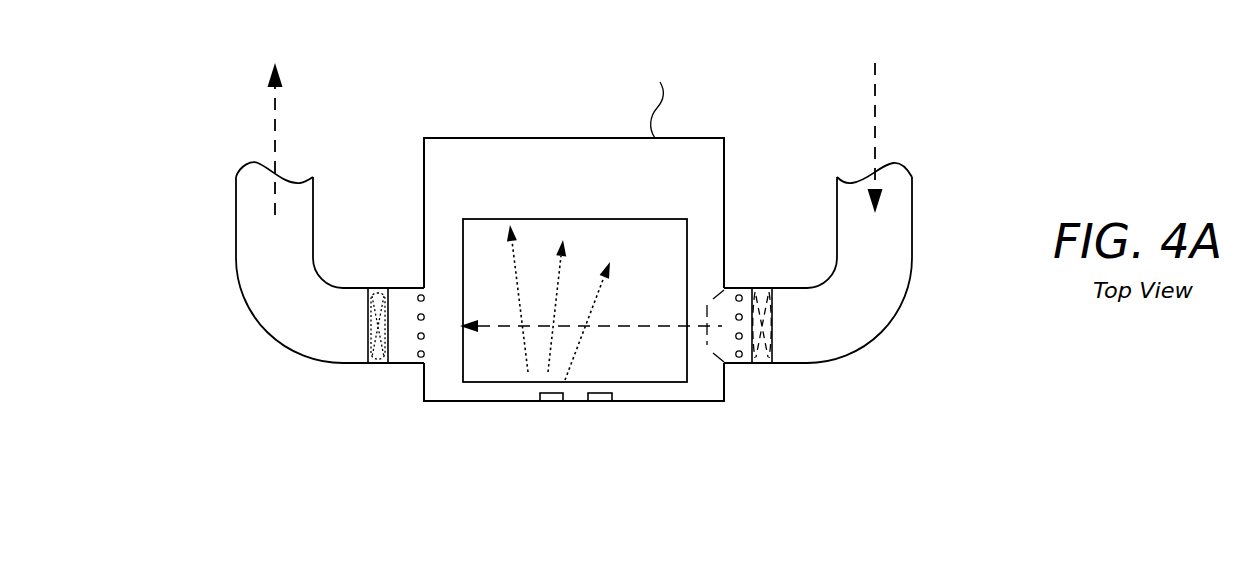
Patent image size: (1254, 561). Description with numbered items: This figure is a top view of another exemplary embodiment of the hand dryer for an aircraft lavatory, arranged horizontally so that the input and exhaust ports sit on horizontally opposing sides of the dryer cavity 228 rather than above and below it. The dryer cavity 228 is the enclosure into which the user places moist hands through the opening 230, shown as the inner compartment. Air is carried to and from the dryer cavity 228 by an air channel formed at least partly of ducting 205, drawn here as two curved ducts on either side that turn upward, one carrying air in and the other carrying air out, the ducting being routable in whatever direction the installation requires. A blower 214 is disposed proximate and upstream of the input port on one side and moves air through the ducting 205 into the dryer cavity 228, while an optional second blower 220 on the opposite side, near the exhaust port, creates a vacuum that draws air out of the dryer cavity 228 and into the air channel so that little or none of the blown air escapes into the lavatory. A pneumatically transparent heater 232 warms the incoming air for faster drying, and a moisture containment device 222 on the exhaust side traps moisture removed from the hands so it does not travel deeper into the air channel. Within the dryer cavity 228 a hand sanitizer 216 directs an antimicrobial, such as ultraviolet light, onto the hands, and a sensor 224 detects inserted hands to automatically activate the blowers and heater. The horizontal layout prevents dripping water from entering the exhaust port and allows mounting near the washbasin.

The ducting 205 is at (255, 317).
The blower 214 is at (772, 355).
The hand sanitizer 216 is at (547, 403).
The second blower 220 is at (368, 347).
The moisture containment device 222 is at (418, 340).
The sensor 224 is at (602, 403).
The dryer cavity 228 is at (555, 187).
The opening 230 is at (650, 242).
The heater 232 is at (740, 360).